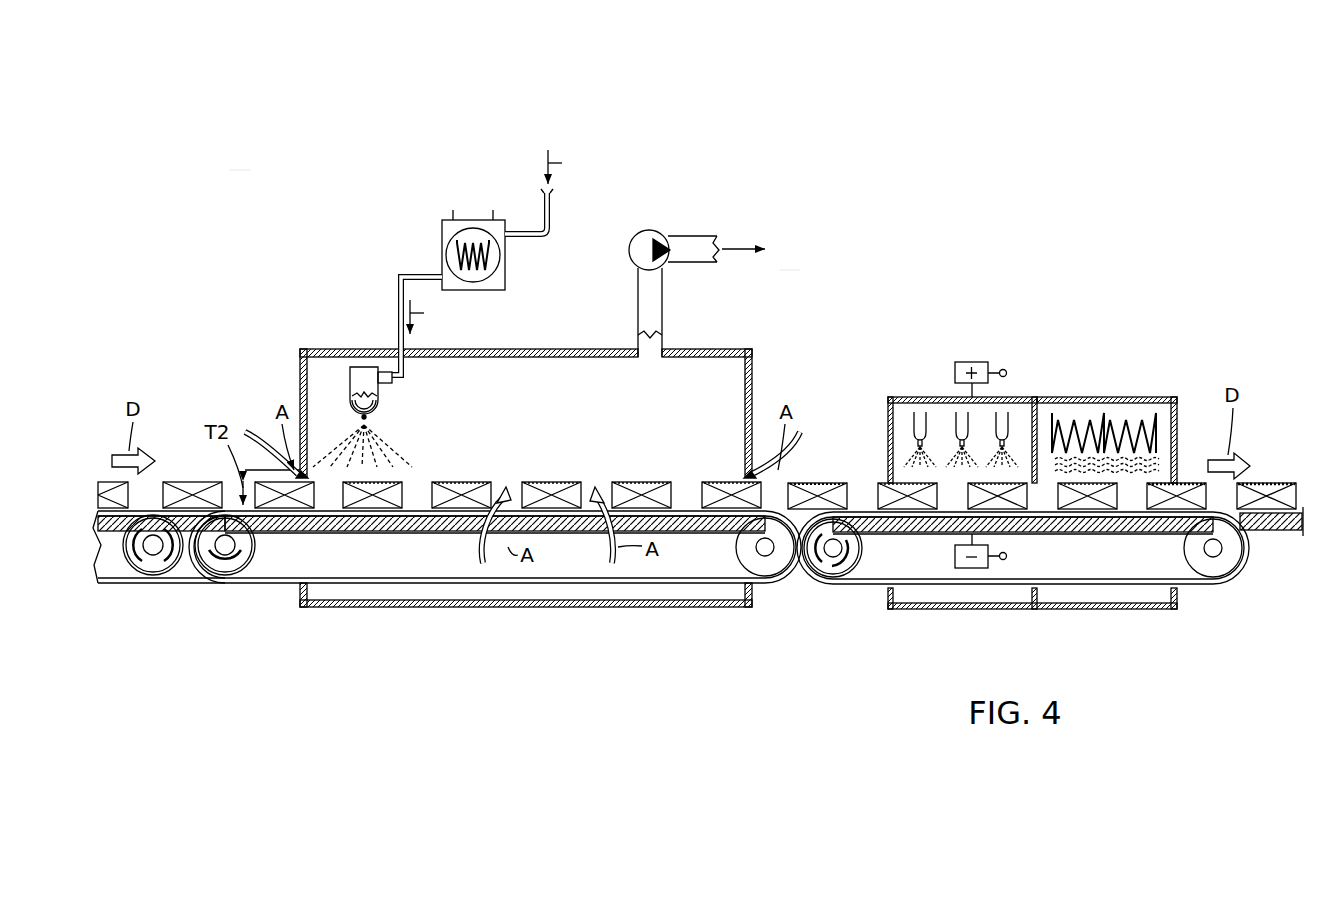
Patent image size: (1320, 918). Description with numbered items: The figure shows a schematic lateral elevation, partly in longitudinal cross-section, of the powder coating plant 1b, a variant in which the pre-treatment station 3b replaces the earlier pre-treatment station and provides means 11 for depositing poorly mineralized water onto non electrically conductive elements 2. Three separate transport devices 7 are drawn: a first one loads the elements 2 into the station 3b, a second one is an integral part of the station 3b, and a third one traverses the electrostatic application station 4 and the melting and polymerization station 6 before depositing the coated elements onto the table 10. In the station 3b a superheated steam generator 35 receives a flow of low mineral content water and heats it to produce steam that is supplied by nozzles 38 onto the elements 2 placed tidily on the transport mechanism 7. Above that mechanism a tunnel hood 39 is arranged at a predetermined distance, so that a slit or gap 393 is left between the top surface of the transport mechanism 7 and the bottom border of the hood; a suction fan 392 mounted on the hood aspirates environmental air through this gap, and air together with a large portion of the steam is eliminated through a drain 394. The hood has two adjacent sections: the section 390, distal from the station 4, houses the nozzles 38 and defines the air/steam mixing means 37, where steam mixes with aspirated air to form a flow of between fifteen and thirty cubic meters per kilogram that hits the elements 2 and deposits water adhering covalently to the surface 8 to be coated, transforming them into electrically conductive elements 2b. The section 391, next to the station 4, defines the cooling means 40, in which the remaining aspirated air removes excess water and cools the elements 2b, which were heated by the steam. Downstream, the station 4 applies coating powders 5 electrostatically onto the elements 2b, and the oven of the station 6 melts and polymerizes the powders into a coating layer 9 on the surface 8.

The means for depositing and/or adsorbing poorly mineralized water 11 is at (236, 162).
The pre-treatment station 3b is at (584, 214).
The powder coating plant 1b is at (790, 260).
The suction fan/aspirator 392 is at (643, 230).
The drain 394 is at (698, 242).
The superheated steam generator 35 is at (473, 280).
The air/steam mixing means 37 is at (493, 424).
The tunnel hood 39 is at (697, 349).
The cooling means 40 is at (737, 351).
The section of tunnel hood 391 is at (770, 362).
The nozzles 38 is at (381, 414).
The surface to be coated 8 is at (393, 477).
The non electrically conductive elements 2 is at (192, 484).
The slit or gap 393 is at (320, 480).
The transport mechanism 7 is at (133, 592).
The section of tunnel hood 390 is at (456, 450).
The electrically conductive elements 2b is at (818, 479).
The electrostatic application station 4 is at (933, 391).
The coating powders 5 is at (998, 452).
The melting and polymerization station 6 is at (1104, 388).
The coating layer 9 is at (1186, 483).
The table 10 is at (1301, 532).